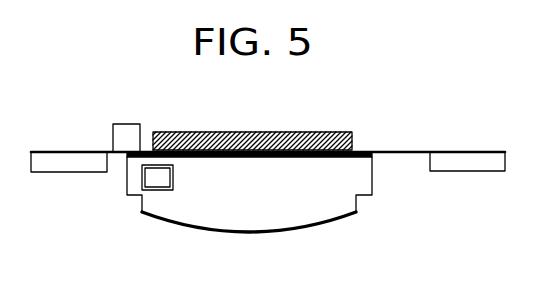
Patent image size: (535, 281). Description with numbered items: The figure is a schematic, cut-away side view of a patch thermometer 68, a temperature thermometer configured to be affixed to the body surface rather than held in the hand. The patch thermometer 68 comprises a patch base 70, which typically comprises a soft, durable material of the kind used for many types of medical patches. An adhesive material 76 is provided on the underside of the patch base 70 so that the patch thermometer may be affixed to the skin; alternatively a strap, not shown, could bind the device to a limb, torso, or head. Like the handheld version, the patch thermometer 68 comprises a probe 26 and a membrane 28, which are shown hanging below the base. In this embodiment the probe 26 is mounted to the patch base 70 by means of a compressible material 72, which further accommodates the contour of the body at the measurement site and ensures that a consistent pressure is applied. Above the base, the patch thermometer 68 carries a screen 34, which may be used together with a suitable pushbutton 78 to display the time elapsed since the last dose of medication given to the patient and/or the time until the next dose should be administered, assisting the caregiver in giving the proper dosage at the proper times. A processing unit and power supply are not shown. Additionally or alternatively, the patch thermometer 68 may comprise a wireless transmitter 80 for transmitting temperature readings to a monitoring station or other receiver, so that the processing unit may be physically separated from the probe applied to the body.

The patch thermometer 68 is at (110, 85).
The pushbutton 78 is at (129, 125).
The screen 34 is at (295, 132).
The compressible material 72 is at (362, 151).
The patch base 70 is at (415, 151).
The adhesive material 76 is at (74, 163).
The probe 26 is at (373, 177).
The membrane 28 is at (320, 226).
The wireless transmitter 80 is at (152, 191).